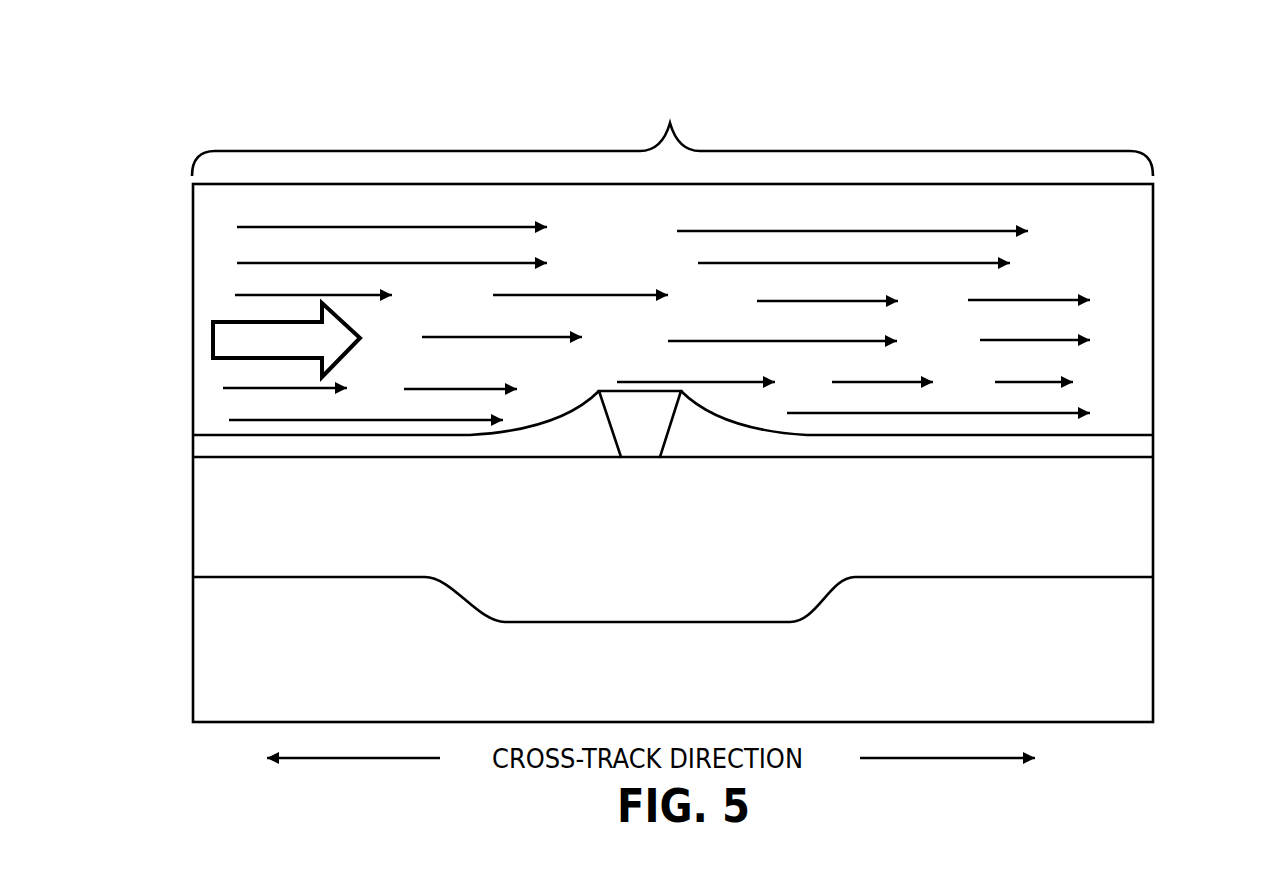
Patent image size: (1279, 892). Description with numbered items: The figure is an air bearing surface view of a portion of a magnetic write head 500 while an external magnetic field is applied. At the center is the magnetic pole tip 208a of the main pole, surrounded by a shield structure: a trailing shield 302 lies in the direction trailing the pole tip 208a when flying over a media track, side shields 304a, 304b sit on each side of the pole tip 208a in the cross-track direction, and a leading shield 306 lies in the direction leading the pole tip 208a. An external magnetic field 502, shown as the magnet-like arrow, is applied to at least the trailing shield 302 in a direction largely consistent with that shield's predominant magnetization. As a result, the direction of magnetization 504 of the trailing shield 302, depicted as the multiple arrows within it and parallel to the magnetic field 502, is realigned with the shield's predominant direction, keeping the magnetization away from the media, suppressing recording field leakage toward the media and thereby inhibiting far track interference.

The magnetic write head 500 is at (256, 103).
The external magnetic field 502 is at (210, 333).
The direction of magnetization 504 is at (672, 130).
The trailing shield 302 is at (1092, 244).
The side shield 304a is at (208, 442).
The side shield 304b is at (1135, 447).
The magnetic pole tip 208a is at (624, 438).
The leading shield 306 is at (1085, 559).